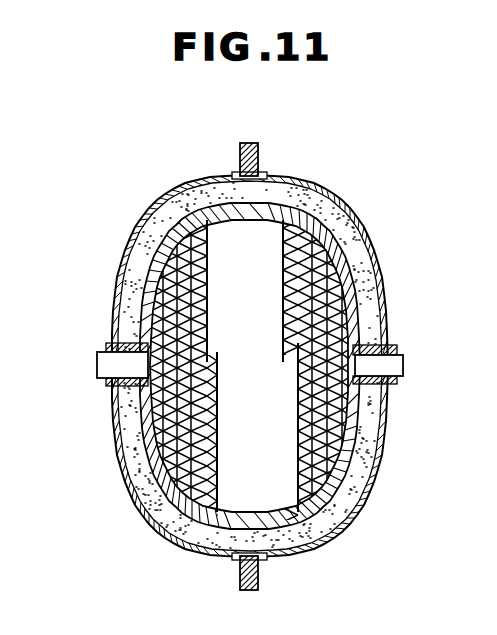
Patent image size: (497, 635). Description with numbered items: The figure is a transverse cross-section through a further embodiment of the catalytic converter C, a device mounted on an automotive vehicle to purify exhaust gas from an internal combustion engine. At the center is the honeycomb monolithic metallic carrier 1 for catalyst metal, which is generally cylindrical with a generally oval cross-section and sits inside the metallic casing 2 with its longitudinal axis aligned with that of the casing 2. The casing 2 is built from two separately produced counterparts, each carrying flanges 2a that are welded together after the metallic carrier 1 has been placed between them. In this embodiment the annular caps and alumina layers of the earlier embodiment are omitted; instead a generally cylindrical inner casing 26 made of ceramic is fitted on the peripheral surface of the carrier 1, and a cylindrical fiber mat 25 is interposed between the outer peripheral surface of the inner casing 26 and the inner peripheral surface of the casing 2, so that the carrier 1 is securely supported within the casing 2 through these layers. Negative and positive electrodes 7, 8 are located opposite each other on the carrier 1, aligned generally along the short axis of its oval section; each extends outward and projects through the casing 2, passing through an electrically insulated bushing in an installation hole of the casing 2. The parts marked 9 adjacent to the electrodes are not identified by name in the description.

The catalytic converter C is at (337, 176).
The honeycomb monolithic metallic carrier 1 is at (357, 234).
The metallic casing 2 is at (389, 440).
The flanges 2a is at (241, 152).
The negative electrode 7 is at (403, 363).
The positive electrode 8 is at (97, 362).
The port collar 9 is at (118, 383).
The cylindrical fiber mat 25 is at (357, 506).
The inner casing 26 is at (369, 470).